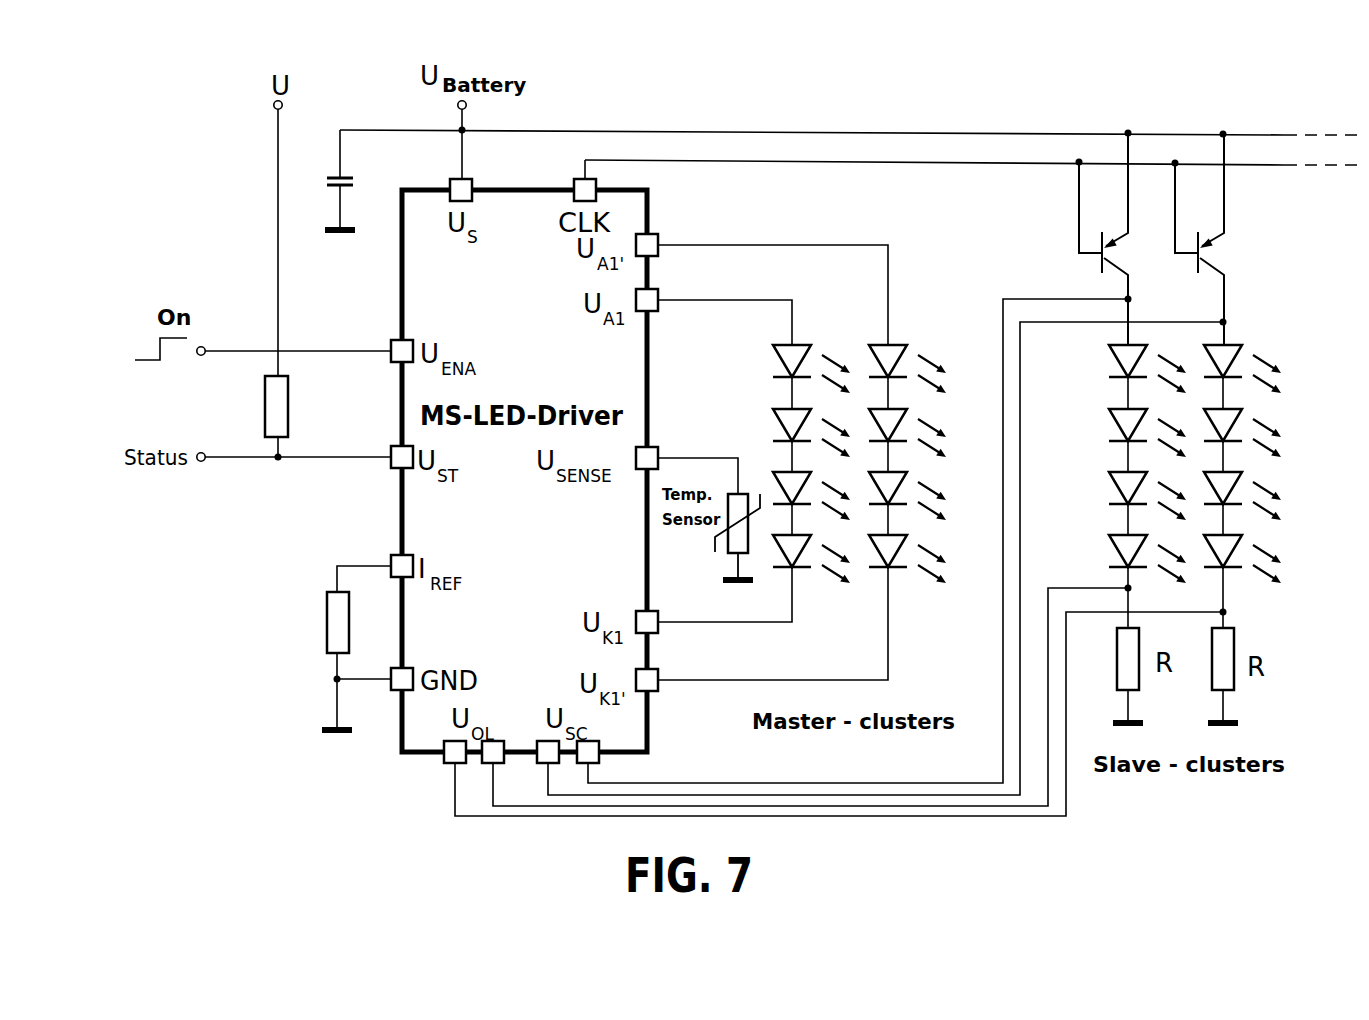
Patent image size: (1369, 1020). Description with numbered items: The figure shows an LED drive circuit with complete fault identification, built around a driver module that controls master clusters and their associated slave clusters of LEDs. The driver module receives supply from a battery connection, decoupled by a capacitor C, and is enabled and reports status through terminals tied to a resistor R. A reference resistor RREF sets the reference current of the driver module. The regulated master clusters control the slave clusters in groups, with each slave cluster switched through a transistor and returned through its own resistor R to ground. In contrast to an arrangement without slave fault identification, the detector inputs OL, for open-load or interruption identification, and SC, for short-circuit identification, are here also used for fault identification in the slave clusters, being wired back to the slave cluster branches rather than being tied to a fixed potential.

The capacitor C is at (330, 180).
The resistor R is at (289, 406).
The reference resistor RREF is at (322, 648).